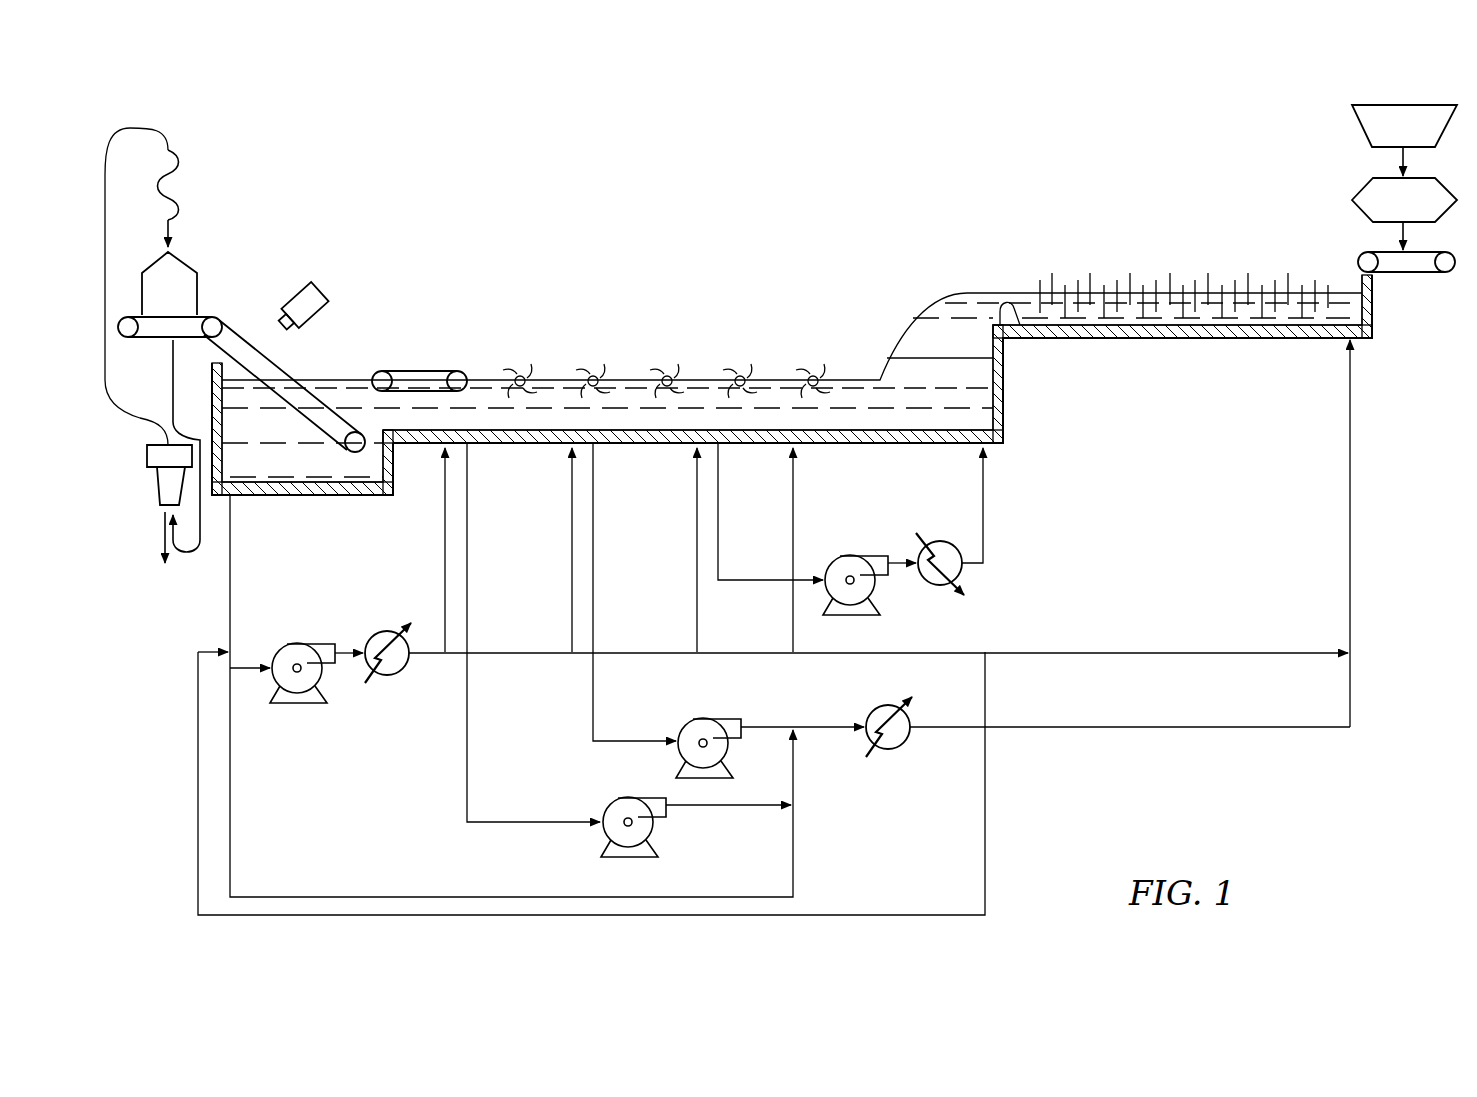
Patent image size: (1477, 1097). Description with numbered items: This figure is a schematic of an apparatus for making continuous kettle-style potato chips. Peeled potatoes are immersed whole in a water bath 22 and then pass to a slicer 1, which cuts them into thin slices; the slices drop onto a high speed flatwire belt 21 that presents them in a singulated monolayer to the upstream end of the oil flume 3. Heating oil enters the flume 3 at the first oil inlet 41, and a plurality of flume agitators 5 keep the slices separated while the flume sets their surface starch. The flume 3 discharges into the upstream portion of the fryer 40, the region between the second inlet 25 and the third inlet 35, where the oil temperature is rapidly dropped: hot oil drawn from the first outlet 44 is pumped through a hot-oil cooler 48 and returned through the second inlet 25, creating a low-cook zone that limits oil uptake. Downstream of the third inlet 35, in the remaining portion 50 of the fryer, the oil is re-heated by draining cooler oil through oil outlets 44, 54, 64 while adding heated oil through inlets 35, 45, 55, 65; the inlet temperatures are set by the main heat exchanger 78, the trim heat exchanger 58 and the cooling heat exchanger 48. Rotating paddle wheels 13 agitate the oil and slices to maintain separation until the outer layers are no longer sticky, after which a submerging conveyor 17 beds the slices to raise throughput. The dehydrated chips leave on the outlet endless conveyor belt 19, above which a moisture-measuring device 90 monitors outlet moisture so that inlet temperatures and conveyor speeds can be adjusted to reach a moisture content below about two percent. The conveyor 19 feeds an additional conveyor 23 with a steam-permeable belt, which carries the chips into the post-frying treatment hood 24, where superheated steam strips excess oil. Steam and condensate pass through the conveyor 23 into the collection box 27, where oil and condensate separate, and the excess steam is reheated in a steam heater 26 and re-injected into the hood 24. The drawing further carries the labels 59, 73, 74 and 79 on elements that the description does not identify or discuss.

The slicer 1 is at (1362, 187).
The oil flume 3 is at (1212, 357).
The flume agitators 5 is at (1195, 298).
The paddle wheels 13 is at (808, 372).
The submerging conveyor 17 is at (420, 365).
The outlet endless conveyor belt 19 is at (222, 318).
The high speed flatwire belt 21 is at (1420, 280).
The water bath 22 is at (1355, 128).
The additional conveyor 23 is at (150, 340).
The post-frying treatment hood 24 is at (190, 262).
The second inlet 25 is at (988, 448).
The steam heater 26 is at (175, 182).
The collection box 27 is at (150, 488).
The third inlet 35 is at (796, 452).
The fryer 40 is at (866, 464).
The first oil inlet 41 is at (1352, 462).
The first outlet 44 is at (721, 448).
The fourth inlet 45 is at (692, 452).
The hot-oil cooler 48 is at (940, 540).
The remaining portion of the fryer 50 is at (766, 460).
The oil outlet 54 is at (597, 448).
The fifth inlet 55 is at (566, 452).
The trim heat exchanger 58 is at (903, 746).
The supply line 59 is at (1100, 730).
The oil outlet 64 is at (470, 448).
The sixth inlet 65 is at (440, 452).
The recirculation line 73 is at (985, 795).
The tank 74 is at (232, 500).
The main heat exchanger 78 is at (402, 672).
The supply line 79 is at (1100, 656).
The moisture-measuring device 90 is at (320, 297).